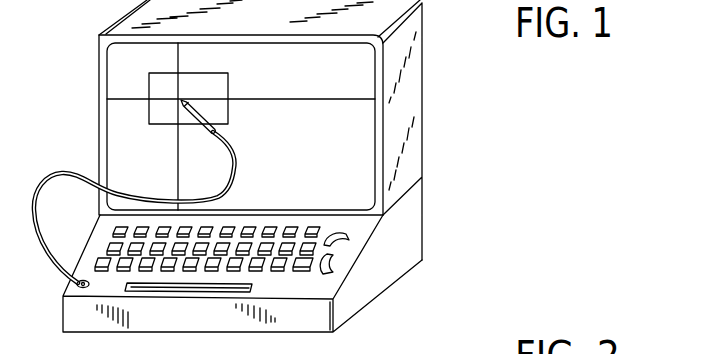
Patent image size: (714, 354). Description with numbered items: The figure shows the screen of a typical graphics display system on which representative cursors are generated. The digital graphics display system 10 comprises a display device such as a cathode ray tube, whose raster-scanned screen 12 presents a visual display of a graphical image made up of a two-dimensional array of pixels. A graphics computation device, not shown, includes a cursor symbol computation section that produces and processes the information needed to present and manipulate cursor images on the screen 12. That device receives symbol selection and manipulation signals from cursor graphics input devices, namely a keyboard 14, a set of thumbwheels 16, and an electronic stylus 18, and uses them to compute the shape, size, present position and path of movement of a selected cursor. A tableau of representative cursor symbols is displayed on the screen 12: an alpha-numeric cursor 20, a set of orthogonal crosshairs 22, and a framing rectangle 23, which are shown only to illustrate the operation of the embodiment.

The digital graphics display system 10 is at (415, 152).
The screen 12 is at (358, 123).
The keyboard 14 is at (274, 287).
The set of thumbwheels 16 is at (335, 267).
The electronic stylus 18 is at (203, 115).
The alpha-numeric cursor 20 is at (219, 197).
The set of orthogonal crosshairs 22 is at (253, 99).
The framing rectangle 23 is at (149, 83).